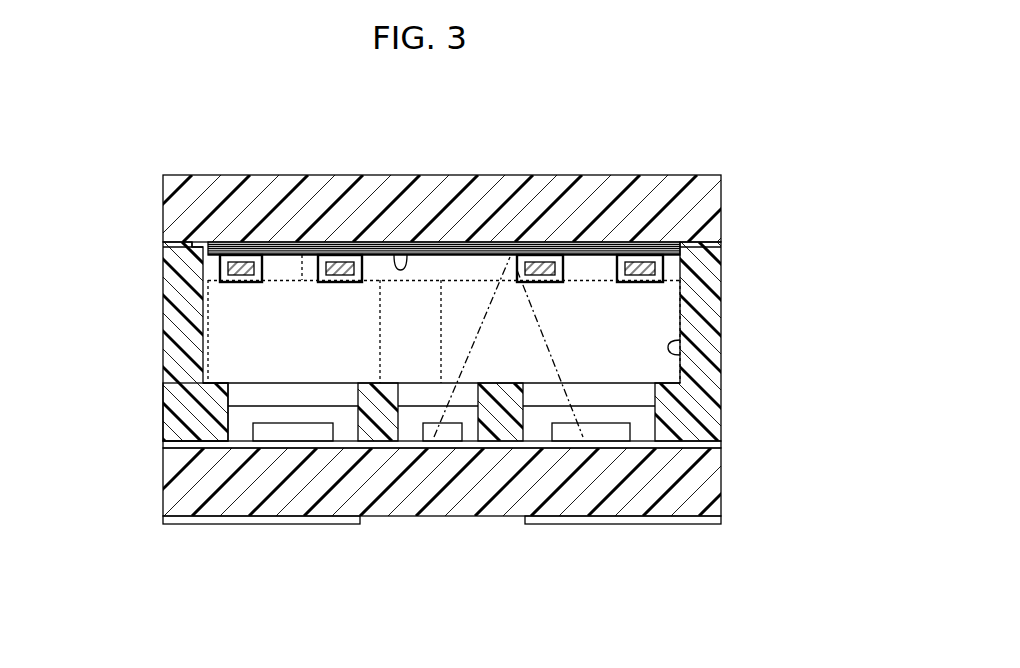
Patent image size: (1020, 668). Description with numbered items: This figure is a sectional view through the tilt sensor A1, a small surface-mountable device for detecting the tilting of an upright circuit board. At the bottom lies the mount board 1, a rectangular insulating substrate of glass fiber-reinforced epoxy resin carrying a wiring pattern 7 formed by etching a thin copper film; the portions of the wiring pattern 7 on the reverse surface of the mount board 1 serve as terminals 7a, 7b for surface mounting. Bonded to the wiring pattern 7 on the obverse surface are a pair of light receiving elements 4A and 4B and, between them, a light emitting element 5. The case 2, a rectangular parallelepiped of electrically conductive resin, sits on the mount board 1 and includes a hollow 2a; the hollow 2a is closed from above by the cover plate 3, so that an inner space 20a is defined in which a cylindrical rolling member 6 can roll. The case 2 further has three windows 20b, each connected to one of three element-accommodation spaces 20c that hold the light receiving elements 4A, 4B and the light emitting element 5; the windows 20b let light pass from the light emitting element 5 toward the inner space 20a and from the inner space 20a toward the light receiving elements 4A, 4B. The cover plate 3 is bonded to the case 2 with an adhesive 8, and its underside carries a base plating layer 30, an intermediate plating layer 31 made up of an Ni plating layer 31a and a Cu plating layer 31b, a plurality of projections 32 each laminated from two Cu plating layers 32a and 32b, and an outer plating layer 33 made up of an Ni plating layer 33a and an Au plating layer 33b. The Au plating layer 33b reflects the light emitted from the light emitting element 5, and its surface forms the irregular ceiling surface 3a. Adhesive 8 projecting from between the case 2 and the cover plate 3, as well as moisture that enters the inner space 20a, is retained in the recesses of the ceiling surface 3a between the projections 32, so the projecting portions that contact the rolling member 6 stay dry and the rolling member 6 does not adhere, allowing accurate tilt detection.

The tilt sensor A1 is at (168, 163).
The mount board 1 is at (707, 473).
The case 2 is at (458, 341).
The hollow 2a is at (722, 352).
The cover plate 3 is at (653, 181).
The ceiling surface 3a is at (400, 255).
The light receiving element 4A is at (295, 432).
The light receiving element 4B is at (583, 433).
The light emitting element 5 is at (438, 432).
The rolling member 6 is at (300, 242).
The wiring pattern 7 is at (163, 450).
The terminal 7a is at (223, 516).
The terminal 7b is at (672, 524).
The adhesive 8 is at (162, 247).
The inner space 20a is at (163, 282).
The window 20b is at (163, 368).
The element-accommodation space 20c is at (165, 405).
The base plating layer 30 is at (537, 244).
The intermediate plating layer 31 is at (537, 213).
The Ni plating layer 31a is at (700, 245).
The Cu plating layer 31b is at (700, 247).
The projection 32 is at (537, 260).
The Cu plating layer 32a is at (700, 249).
The Cu plating layer 32b is at (700, 251).
The outer plating layer 33 is at (537, 296).
The Ni plating layer 33a is at (700, 254).
The Au plating layer 33b is at (700, 257).